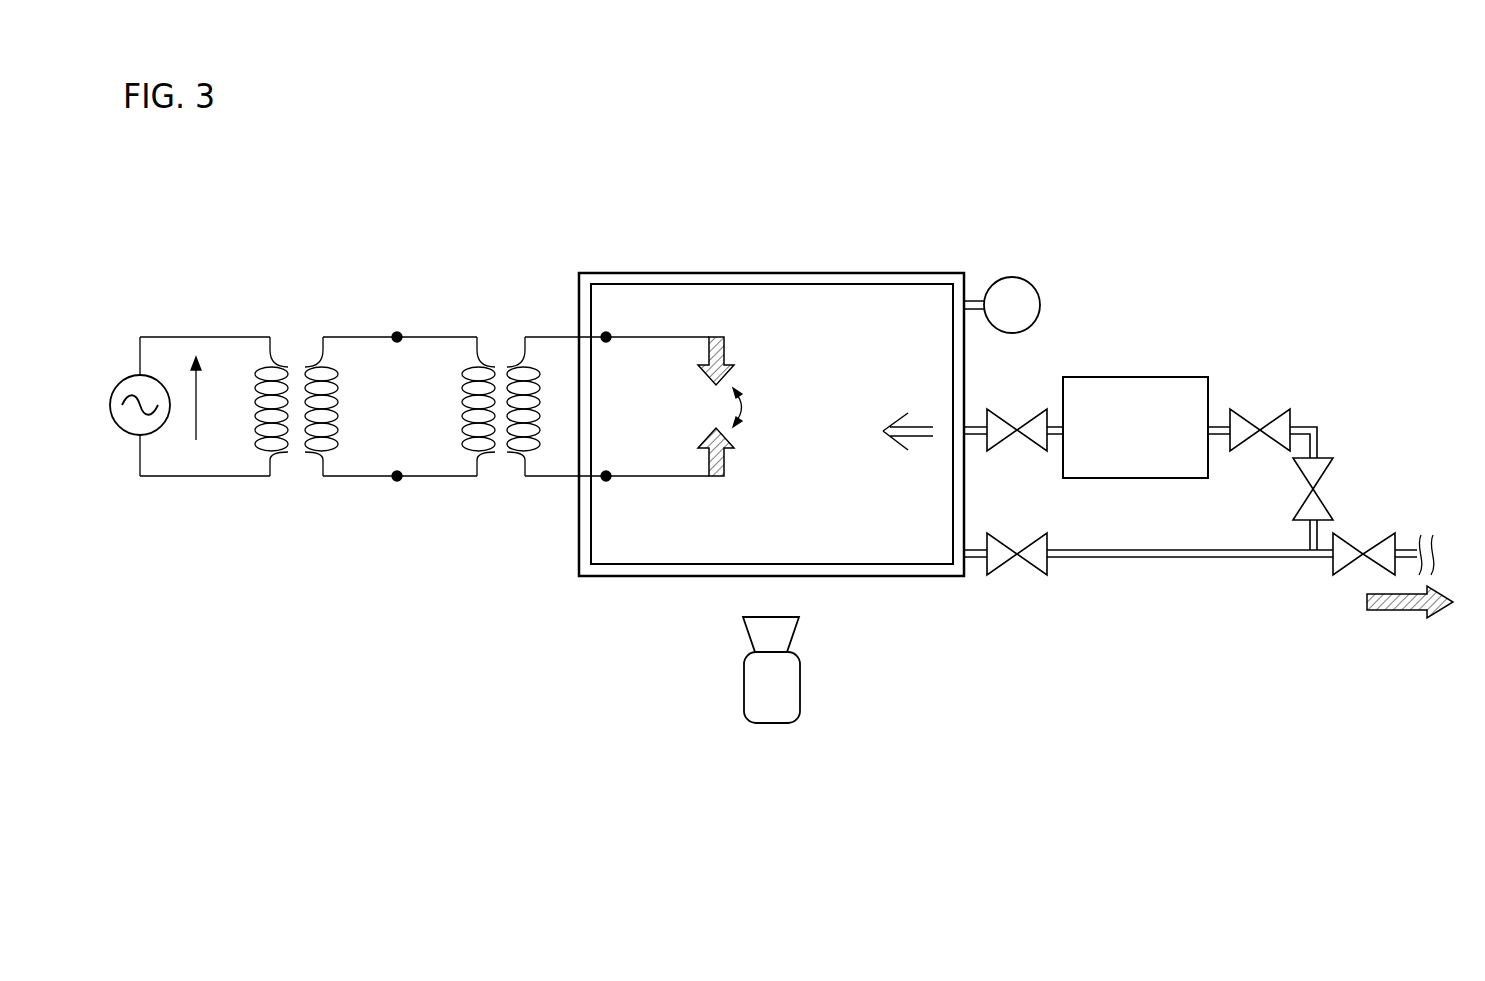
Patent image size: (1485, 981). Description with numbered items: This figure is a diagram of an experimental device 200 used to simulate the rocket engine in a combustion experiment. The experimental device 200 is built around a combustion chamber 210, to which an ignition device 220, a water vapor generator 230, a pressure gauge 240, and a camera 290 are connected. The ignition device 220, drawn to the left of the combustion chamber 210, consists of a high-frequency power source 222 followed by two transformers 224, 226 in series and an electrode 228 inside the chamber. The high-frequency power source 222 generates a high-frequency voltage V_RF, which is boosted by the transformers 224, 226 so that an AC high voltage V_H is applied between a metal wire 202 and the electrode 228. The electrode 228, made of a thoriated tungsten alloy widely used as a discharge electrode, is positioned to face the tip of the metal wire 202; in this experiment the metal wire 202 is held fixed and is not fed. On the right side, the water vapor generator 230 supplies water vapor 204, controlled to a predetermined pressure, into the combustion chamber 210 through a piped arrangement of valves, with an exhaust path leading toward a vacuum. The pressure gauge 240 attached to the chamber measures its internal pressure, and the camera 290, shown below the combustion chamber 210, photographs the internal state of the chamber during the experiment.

The experimental device 200 is at (1272, 176).
The metal wire 202 is at (727, 377).
The water vapor 204 is at (913, 448).
The combustion chamber 210 is at (835, 275).
The ignition device 220 is at (727, 538).
The high-frequency power source 222 is at (122, 433).
The transformer 224 is at (297, 468).
The transformer 226 is at (497, 468).
The electrode 228 is at (727, 458).
The water vapor generator 230 is at (1223, 487).
The pressure gauge 240 is at (1040, 300).
The camera 290 is at (800, 680).